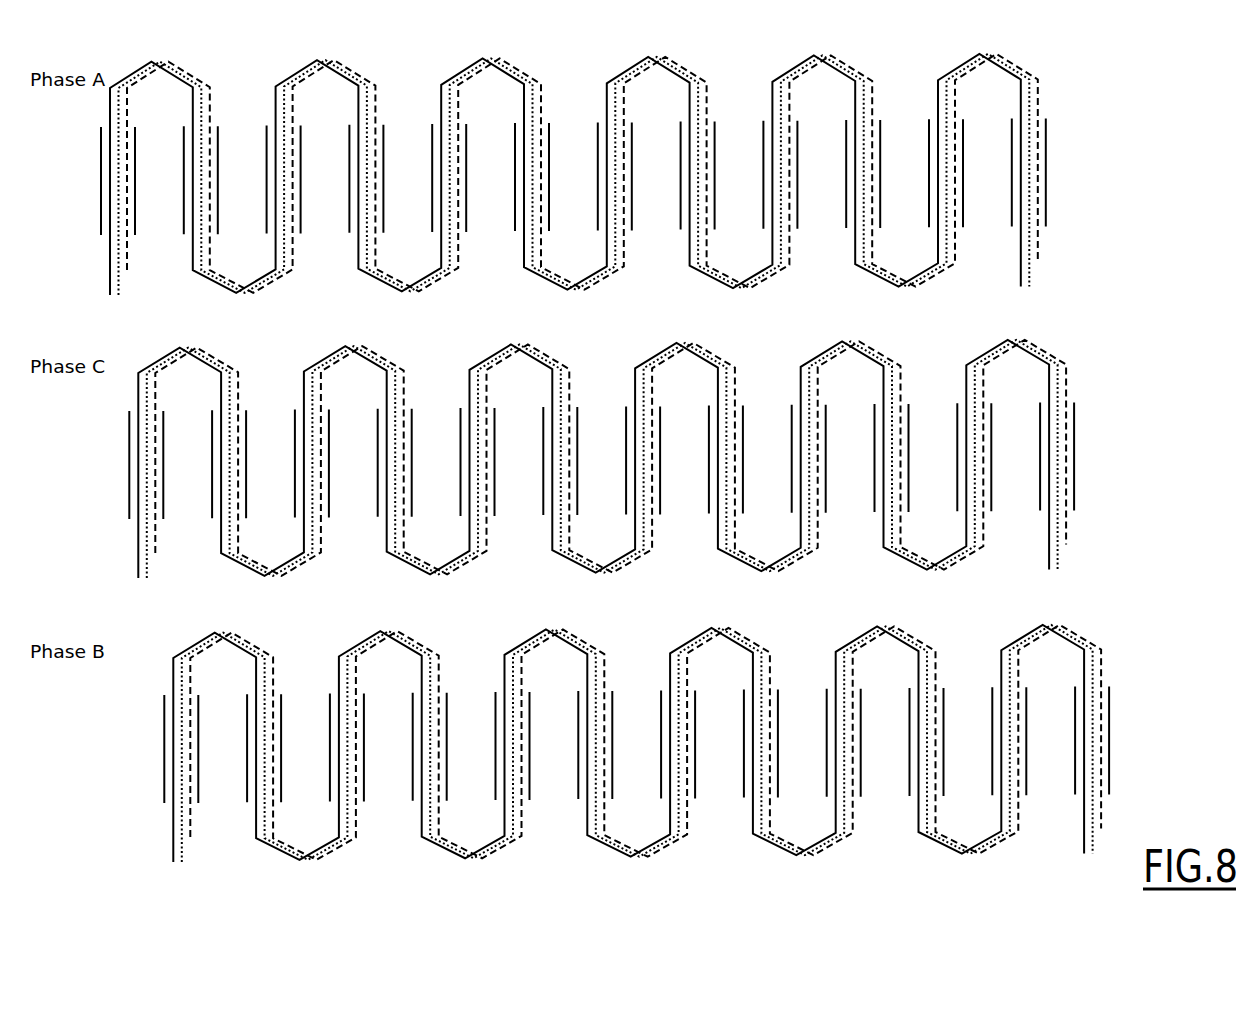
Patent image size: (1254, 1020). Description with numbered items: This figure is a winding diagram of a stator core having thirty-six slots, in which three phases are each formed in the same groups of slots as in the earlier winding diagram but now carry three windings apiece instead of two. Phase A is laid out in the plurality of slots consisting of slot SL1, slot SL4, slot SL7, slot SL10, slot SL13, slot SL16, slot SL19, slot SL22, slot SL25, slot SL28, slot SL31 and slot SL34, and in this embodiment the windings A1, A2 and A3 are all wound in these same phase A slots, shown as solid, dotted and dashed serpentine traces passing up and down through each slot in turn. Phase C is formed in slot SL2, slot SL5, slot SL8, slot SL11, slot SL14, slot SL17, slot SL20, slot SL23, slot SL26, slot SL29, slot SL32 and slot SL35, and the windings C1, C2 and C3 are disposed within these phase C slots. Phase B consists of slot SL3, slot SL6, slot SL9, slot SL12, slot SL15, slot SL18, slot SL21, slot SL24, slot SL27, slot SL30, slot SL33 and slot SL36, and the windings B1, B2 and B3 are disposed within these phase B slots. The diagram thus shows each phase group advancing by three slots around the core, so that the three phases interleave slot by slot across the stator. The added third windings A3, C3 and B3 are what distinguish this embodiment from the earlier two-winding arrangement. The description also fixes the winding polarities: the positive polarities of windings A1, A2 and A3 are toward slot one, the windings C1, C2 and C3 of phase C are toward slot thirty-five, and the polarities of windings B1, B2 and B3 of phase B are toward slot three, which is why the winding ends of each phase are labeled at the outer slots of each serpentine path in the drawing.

The winding A1 is at (554, 179).
The winding A2 is at (589, 179).
The winding A3 is at (595, 173).
The winding B1 is at (617, 748).
The winding B2 is at (652, 748).
The winding B3 is at (658, 742).
The winding C1 is at (582, 463).
The winding C2 is at (617, 463).
The winding C3 is at (623, 458).
The slot SL1 is at (114, 227).
The slot SL2 is at (143, 511).
The slot SL3 is at (178, 795).
The slot SL4 is at (197, 226).
The slot SL5 is at (226, 510).
The slot SL6 is at (261, 795).
The slot SL7 is at (280, 227).
The slot SL8 is at (308, 511).
The slot SL9 is at (343, 795).
The slot SL10 is at (360, 226).
The slot SL11 is at (389, 510).
The slot SL12 is at (424, 794).
The slot SL13 is at (443, 225).
The slot SL14 is at (472, 509).
The slot SL15 is at (507, 794).
The slot SL16 is at (526, 225).
The slot SL17 is at (554, 509).
The slot SL18 is at (589, 793).
The slot SL19 is at (609, 224).
The slot SL20 is at (637, 508).
The slot SL21 is at (672, 793).
The slot SL22 is at (692, 224).
The slot SL23 is at (720, 508).
The slot SL24 is at (755, 793).
The slot SL25 is at (774, 224).
The slot SL26 is at (803, 508).
The slot SL27 is at (838, 792).
The slot SL28 is at (857, 223).
The slot SL29 is at (886, 507).
The slot SL30 is at (921, 792).
The slot SL31 is at (940, 223).
The slot SL32 is at (968, 507).
The slot SL33 is at (1003, 791).
The slot SL34 is at (1023, 223).
The slot SL35 is at (1051, 507).
The slot SL36 is at (1086, 792).